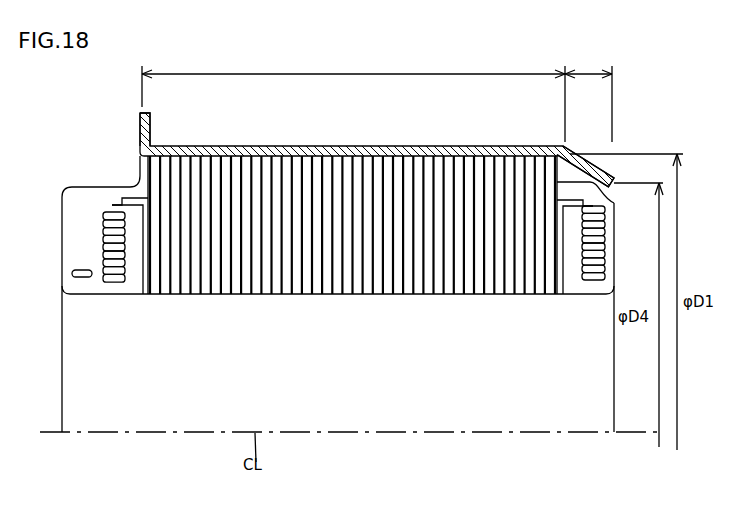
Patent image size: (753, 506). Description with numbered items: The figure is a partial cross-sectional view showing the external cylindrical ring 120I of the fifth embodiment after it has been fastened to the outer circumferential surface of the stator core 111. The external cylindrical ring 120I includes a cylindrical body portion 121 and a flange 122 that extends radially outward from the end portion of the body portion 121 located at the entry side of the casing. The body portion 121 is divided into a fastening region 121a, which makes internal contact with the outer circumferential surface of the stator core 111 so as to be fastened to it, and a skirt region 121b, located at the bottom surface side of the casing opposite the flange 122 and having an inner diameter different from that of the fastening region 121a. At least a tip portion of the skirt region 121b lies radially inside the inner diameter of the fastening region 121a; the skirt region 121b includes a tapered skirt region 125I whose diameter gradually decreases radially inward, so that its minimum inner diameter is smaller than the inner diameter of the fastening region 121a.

The stator core 111 is at (330, 280).
The external cylindrical ring 120I is at (641, 133).
The cylindrical body portion 121 is at (366, 146).
The fastening region 121a is at (353, 81).
The skirt region 121b is at (588, 98).
The flange 122 is at (140, 134).
The tapered skirt region 125I is at (596, 160).